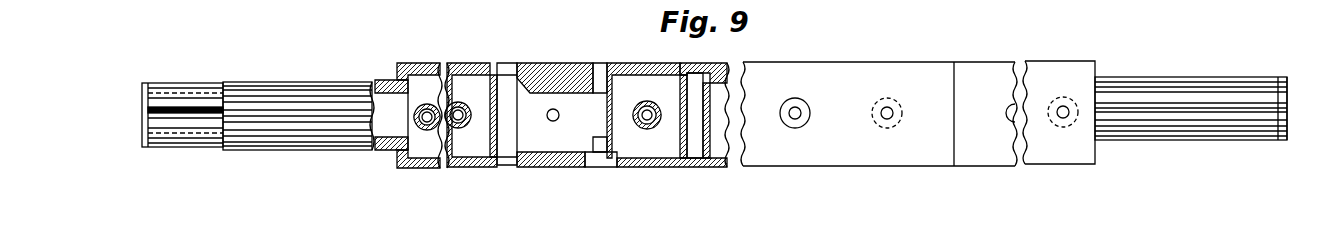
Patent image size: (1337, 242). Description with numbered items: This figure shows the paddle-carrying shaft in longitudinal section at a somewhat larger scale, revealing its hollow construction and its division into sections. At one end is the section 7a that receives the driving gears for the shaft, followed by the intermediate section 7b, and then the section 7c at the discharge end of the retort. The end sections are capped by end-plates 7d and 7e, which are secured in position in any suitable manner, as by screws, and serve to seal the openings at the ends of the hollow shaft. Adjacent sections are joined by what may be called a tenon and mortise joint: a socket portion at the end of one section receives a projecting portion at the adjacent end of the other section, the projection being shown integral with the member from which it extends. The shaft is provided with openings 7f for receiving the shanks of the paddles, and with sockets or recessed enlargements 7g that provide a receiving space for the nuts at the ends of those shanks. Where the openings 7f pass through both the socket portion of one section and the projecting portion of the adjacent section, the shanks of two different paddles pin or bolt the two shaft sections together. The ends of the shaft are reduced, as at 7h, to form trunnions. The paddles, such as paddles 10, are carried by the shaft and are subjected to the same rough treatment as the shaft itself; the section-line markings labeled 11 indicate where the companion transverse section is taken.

The driving-gear section of shaft 7a is at (417, 172).
The intermediate section 7b is at (770, 167).
The discharge-end section 7c is at (1086, 164).
The end-plate 7d is at (143, 147).
The end-plate 7e is at (1284, 142).
The openings 7f is at (643, 104).
The sockets or recessed enlargements 7g is at (601, 166).
The reduced shaft ends 7h is at (253, 149).
The paddles 10 is at (888, 200).
The section line 11- 11 is at (552, 200).